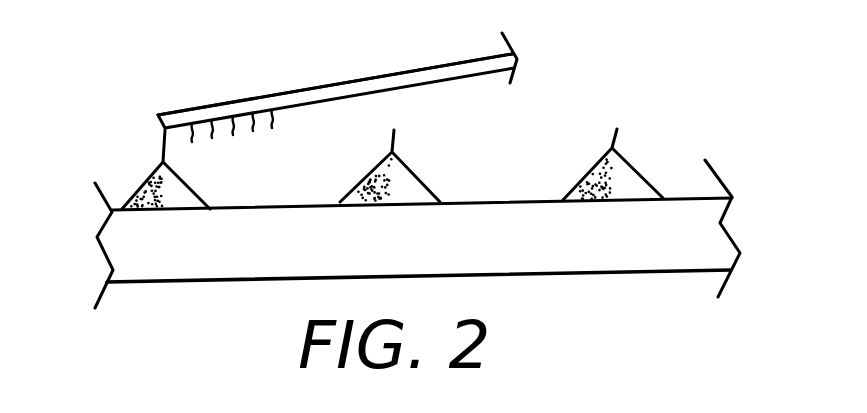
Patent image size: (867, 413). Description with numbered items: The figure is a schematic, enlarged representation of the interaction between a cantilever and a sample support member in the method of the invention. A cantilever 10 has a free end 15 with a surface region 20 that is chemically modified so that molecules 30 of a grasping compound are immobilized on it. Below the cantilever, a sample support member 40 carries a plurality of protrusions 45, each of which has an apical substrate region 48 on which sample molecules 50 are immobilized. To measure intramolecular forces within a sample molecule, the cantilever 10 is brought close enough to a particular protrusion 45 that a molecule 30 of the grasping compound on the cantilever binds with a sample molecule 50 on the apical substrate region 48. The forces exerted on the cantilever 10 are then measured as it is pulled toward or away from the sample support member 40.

The cantilever 10 is at (462, 61).
The free end 15 is at (232, 102).
The surface region 20 is at (279, 119).
The molecules of a grasping compound 30 is at (165, 131).
The sample support member 40 is at (687, 249).
The protrusions 45 is at (670, 160).
The apical substrate region 48 is at (396, 150).
The sample molecules 50 is at (167, 147).